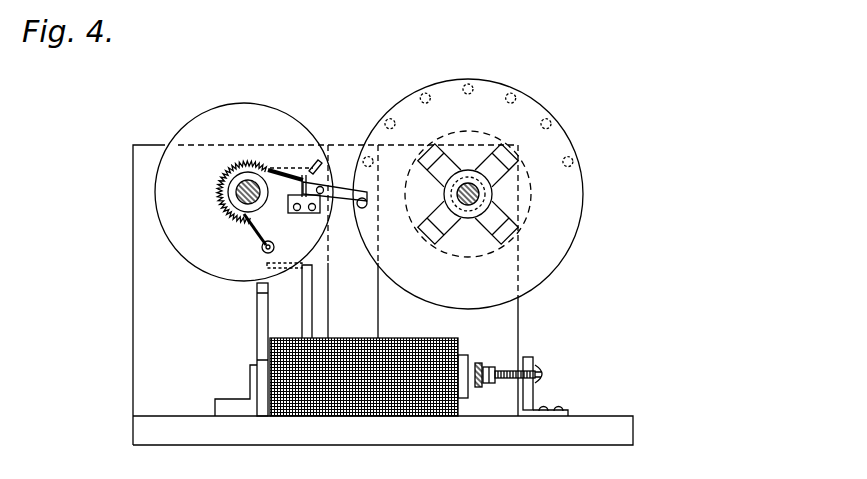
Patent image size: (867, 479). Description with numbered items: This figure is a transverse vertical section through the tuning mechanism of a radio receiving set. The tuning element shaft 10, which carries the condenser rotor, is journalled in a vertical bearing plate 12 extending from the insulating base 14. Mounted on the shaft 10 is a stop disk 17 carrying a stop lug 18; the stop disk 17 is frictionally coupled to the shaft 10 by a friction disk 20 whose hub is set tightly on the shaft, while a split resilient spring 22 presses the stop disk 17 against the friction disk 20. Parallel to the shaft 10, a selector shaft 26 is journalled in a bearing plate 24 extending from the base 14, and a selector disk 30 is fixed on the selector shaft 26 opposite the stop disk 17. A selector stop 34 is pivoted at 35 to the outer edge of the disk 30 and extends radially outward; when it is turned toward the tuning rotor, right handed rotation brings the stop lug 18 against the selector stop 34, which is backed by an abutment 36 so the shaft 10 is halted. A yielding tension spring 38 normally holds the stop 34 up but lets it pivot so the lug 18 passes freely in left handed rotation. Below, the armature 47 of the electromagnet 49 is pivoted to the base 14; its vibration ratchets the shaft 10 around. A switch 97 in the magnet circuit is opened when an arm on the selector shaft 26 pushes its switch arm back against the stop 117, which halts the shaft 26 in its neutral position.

The shaft 10 is at (469, 187).
The bearing plate 12 is at (512, 331).
The insulating base 14 is at (376, 440).
The stop disk 17 is at (525, 110).
The stop lug 18 is at (469, 84).
The friction disk 20 is at (535, 207).
The split resilient spring 22 is at (493, 177).
The bearing plate 24 is at (140, 294).
The selector shaft 26 is at (237, 192).
The selector disk 30 is at (232, 104).
The selector stop 34 is at (360, 191).
The pivot 35 is at (319, 188).
The abutment 36 is at (298, 213).
The tension spring 38 is at (227, 175).
The armature 47 is at (482, 362).
The electromagnet 49 is at (394, 338).
The switch 97 is at (247, 309).
The stop 117 is at (302, 272).